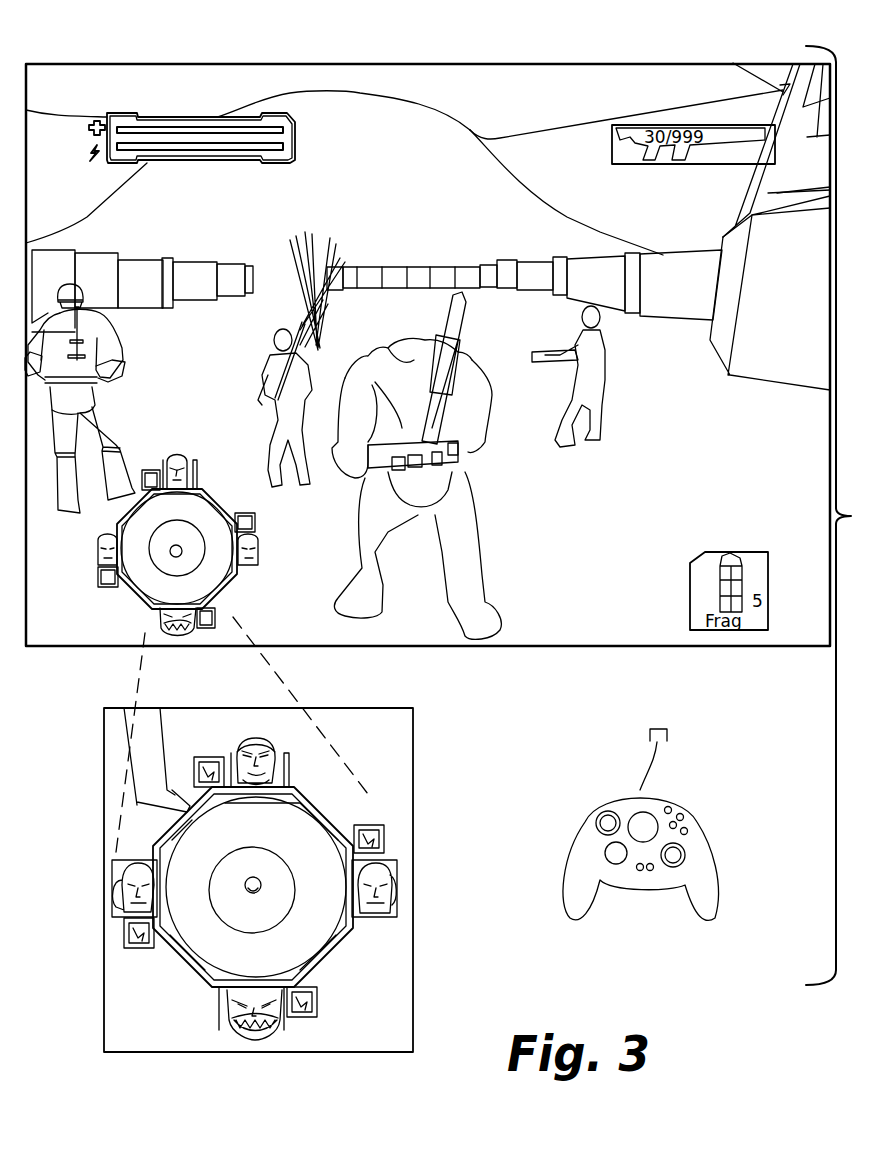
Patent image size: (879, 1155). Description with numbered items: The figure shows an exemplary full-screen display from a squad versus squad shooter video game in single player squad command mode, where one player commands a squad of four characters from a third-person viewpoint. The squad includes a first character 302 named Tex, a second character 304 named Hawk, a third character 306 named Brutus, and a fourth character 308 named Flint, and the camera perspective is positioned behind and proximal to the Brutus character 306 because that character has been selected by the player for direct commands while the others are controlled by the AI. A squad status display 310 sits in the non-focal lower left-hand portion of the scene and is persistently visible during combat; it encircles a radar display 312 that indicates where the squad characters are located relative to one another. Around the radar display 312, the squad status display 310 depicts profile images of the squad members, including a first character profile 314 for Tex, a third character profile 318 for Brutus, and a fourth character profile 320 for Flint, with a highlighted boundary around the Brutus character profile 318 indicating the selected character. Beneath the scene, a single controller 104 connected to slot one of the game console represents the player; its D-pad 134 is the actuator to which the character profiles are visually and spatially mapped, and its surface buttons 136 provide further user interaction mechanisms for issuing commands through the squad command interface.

The controller 104 is at (637, 829).
The D-pad 134 is at (605, 855).
The surface buttons 136 is at (687, 815).
The first character 302 is at (113, 408).
The second character 304 is at (265, 360).
The third character 306 is at (362, 520).
The fourth character 308 is at (602, 383).
The squad status display 310 is at (124, 609).
The radar display 312 is at (252, 883).
The first character profile 314 is at (255, 723).
The third character profile 318 is at (253, 1040).
The fourth character profile 320 is at (385, 858).